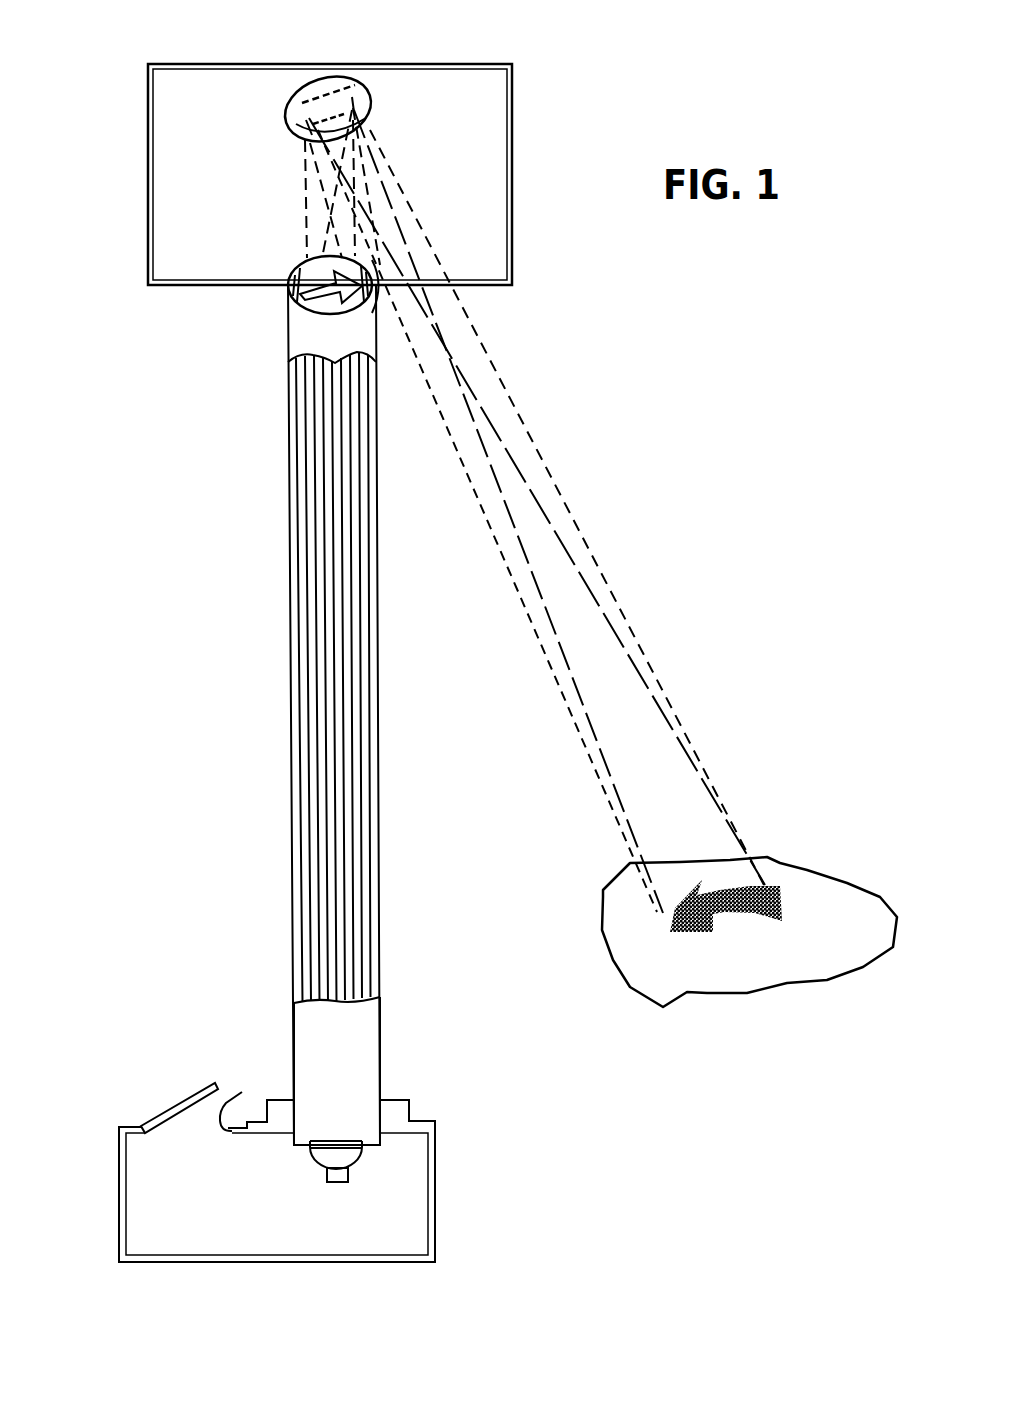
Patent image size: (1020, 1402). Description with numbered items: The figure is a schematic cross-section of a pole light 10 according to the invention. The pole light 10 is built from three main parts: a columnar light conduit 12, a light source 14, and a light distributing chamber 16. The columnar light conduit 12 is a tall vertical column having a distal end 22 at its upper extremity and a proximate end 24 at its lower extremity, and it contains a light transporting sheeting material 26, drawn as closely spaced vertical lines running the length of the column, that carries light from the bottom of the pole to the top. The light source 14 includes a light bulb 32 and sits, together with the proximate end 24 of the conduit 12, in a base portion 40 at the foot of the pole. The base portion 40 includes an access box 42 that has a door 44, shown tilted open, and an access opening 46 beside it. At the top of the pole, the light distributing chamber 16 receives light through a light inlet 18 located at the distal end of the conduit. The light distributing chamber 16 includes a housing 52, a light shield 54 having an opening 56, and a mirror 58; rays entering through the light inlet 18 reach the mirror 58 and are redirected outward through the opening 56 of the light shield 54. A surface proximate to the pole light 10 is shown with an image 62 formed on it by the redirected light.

The pole light 10 is at (132, 1000).
The columnar light conduit 12 is at (273, 797).
The light source 14 is at (332, 1104).
The light distributing chamber 16 is at (140, 163).
The light inlet 18 is at (291, 286).
The distal end 22 is at (276, 370).
The proximate end 24 is at (276, 1030).
The light transporting sheeting material 26 is at (312, 652).
The light bulb 32 is at (345, 1155).
The base portion 40 is at (113, 1225).
The access box 42 is at (200, 1262).
The door 44 is at (180, 1102).
The access opening 46 is at (242, 1092).
The housing 52 is at (512, 150).
The light shield 54 is at (373, 292).
The opening 56 is at (288, 304).
The mirror 58 is at (336, 82).
The image 62 is at (755, 897).